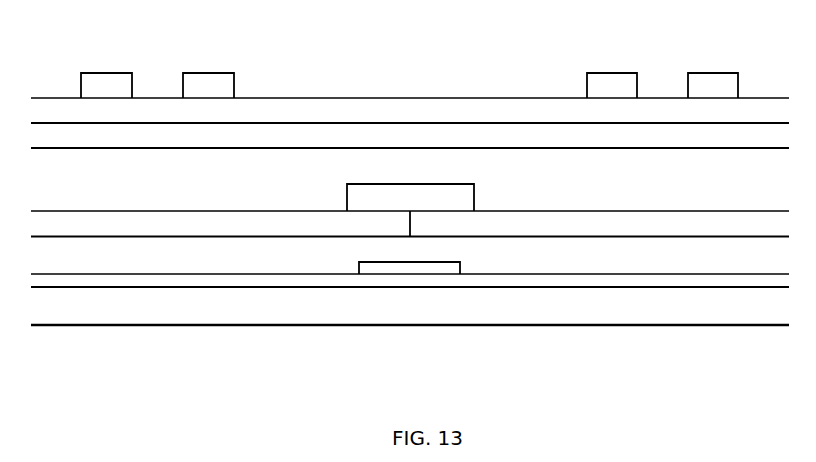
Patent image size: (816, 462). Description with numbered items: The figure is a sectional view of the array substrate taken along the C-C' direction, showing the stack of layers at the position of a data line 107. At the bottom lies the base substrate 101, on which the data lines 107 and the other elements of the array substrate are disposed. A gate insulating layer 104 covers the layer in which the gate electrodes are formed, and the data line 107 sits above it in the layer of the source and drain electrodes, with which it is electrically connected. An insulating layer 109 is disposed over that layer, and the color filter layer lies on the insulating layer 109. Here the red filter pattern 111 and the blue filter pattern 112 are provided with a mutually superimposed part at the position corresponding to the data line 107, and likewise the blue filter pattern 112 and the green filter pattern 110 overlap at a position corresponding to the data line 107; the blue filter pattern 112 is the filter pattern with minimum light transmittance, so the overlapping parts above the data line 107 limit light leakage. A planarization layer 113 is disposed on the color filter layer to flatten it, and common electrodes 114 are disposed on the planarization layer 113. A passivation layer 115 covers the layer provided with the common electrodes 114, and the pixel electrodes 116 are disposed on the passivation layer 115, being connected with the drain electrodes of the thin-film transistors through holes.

The base substrate 101 is at (81, 300).
The gate insulating layer 104 is at (499, 280).
The data line 107 is at (371, 268).
The insulating layer 109 is at (673, 262).
The green filter pattern 110 is at (434, 224).
The red filter pattern 111 is at (111, 224).
The blue filter pattern 112 is at (358, 197).
The planarization layer 113 is at (279, 167).
The common electrode 114 is at (521, 135).
The passivation layer 115 is at (705, 110).
The pixel electrode 116 is at (200, 88).